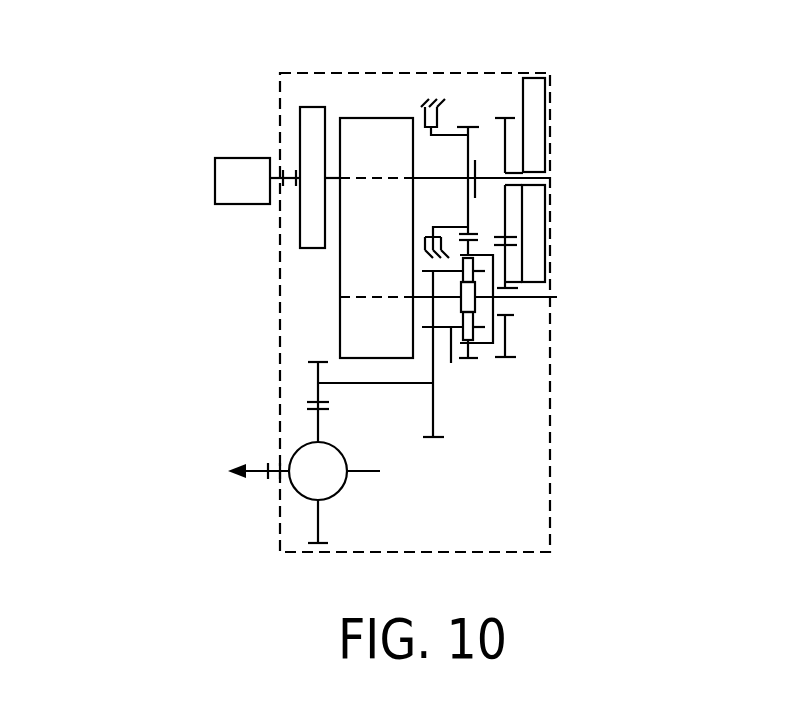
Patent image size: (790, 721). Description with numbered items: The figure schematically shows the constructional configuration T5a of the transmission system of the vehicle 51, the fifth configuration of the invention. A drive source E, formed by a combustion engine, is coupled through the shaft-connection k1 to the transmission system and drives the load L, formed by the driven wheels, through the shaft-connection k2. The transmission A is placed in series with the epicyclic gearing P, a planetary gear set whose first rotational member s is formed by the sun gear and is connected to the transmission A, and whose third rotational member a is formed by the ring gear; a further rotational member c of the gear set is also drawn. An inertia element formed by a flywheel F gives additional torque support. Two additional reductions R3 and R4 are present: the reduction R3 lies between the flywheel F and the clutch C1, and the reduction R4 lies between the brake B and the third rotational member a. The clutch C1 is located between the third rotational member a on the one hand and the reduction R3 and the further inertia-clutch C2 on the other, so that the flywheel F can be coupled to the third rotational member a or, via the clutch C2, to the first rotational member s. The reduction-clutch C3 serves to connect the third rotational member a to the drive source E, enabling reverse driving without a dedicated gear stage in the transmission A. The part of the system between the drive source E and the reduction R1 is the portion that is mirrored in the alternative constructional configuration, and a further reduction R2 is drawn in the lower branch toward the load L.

The vehicle 51 is at (158, 238).
The transmission system configuration T5a is at (394, 66).
The drive source E is at (257, 181).
The shaft-connection k1 is at (285, 187).
The transmission A is at (380, 225).
The brake B is at (436, 106).
The reduction-clutch C3 is at (476, 168).
The flywheel F is at (535, 108).
The reduction R4 is at (466, 232).
The reduction R3 is at (494, 247).
The epicyclic gearing P is at (482, 284).
The first rotational member s is at (492, 297).
The third rotational member a is at (464, 348).
The planet carrier c is at (453, 332).
The further inertia-clutch C2 is at (510, 317).
The inertia-clutch C1 is at (498, 322).
The reduction R1 is at (442, 330).
The second gear stage R2 is at (316, 391).
The shaft-connection k2 is at (276, 481).
The load L is at (247, 475).